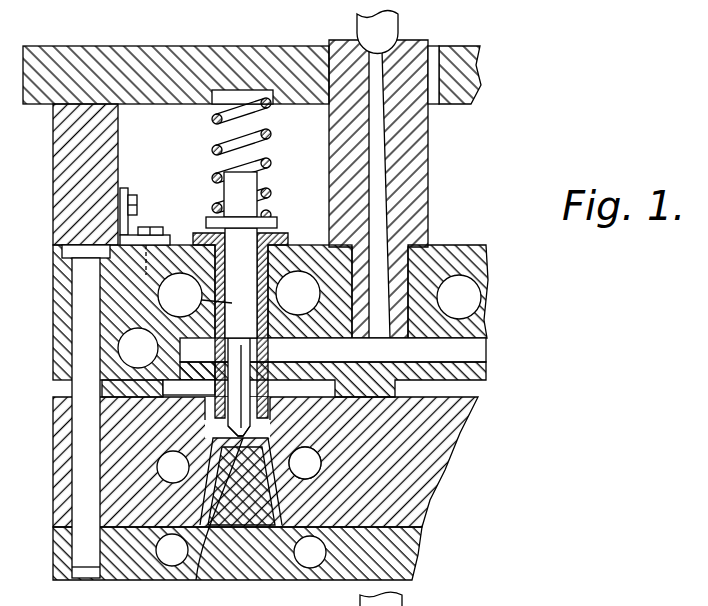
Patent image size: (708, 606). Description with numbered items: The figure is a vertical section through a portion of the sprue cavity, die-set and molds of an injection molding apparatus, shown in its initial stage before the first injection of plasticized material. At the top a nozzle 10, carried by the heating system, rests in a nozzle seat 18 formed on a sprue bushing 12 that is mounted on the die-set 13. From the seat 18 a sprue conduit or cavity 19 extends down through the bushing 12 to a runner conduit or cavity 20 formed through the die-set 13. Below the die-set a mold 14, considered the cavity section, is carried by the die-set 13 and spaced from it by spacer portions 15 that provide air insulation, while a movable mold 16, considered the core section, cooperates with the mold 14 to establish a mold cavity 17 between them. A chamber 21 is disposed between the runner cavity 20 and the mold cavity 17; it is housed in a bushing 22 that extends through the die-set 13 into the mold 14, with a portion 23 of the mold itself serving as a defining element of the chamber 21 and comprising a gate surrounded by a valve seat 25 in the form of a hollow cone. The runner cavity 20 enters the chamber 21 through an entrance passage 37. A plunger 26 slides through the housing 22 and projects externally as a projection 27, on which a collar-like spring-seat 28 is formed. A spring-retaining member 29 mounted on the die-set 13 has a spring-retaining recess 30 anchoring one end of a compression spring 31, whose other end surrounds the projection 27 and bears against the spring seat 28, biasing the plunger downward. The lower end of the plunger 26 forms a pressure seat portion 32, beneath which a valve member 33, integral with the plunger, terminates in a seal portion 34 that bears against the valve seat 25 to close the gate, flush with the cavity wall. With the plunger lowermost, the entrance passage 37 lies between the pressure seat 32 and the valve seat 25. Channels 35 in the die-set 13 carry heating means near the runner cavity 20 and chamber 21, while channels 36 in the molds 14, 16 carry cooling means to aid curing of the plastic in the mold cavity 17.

The nozzle 10 is at (388, 28).
The sprue bushing 12 is at (417, 152).
The die-set 13 is at (466, 247).
The mold 14 is at (453, 435).
The spacer portions 15 is at (400, 392).
The movable mold 16 is at (417, 555).
The mold cavity 17 is at (272, 527).
The nozzle seat 18 is at (431, 46).
The sprue conduit or cavity 19 is at (382, 190).
The runner conduit or cavity 20 is at (474, 352).
The chamber 21 is at (252, 365).
The bushing 22 is at (184, 248).
The portion of the mold 23 is at (237, 432).
The valve seat 25 is at (305, 463).
The plunger 26 is at (195, 295).
The external projection 27 is at (235, 190).
The spring-seat 28 is at (272, 222).
The spring-retaining member 29 is at (210, 34).
The spring-retaining recess 30 is at (251, 90).
The compression spring 31 is at (266, 136).
The pressure seat portion 32 is at (235, 343).
The valve member 33 is at (243, 388).
The seal portion 34 is at (210, 522).
The channels 35 is at (463, 292).
The channels 36 is at (318, 472).
The entrance passage 37 is at (255, 345).